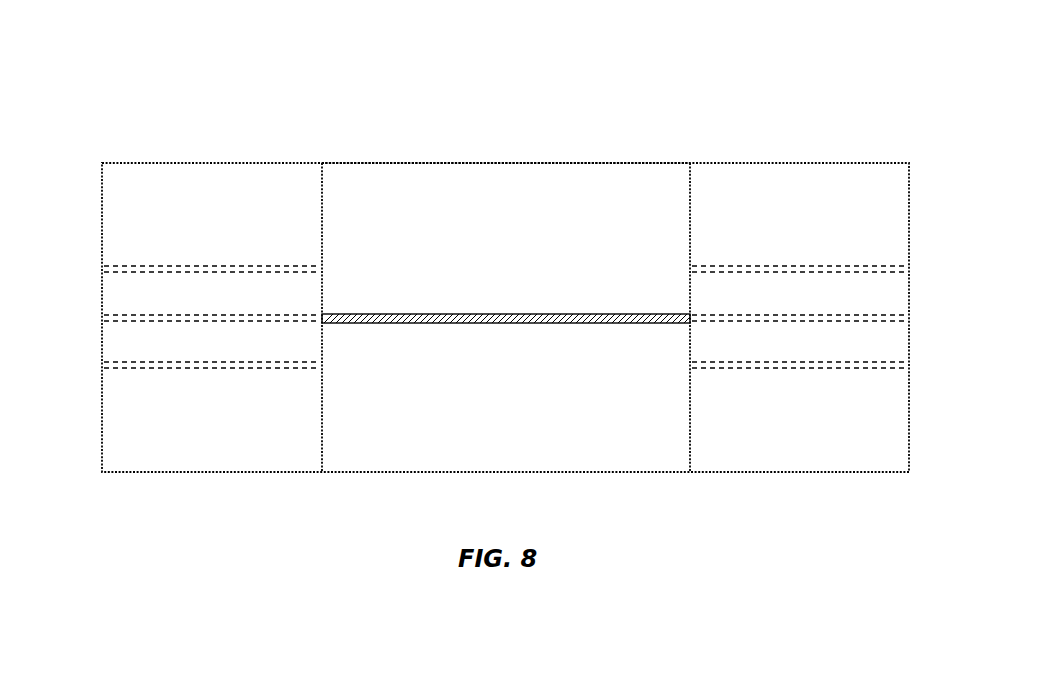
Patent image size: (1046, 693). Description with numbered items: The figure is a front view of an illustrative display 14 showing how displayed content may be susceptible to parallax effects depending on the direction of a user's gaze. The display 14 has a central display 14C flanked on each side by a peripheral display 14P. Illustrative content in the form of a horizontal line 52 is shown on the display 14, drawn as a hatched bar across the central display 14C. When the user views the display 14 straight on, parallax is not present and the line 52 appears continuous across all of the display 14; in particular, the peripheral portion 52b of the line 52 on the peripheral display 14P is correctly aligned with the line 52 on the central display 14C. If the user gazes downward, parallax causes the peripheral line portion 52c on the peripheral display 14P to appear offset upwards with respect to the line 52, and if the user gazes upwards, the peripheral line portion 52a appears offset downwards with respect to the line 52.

The display 14 is at (676, 60).
The peripheral display 14P is at (318, 143).
The central display 14C is at (687, 143).
The horizontal line 52 is at (525, 324).
The peripheral line portion 52a is at (133, 362).
The peripheral portion of line 52b is at (133, 315).
The peripheral line portion 52c is at (133, 266).